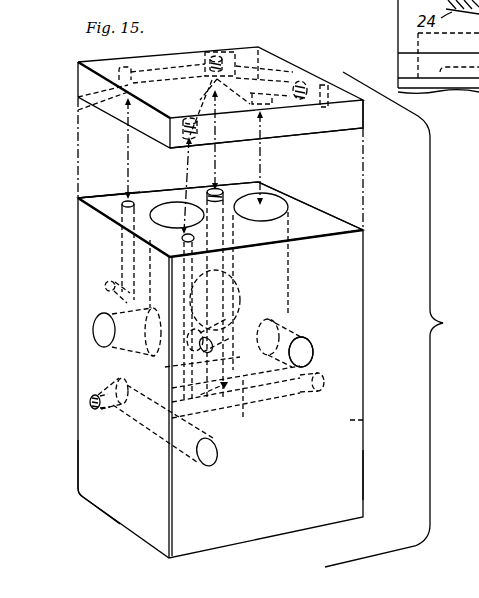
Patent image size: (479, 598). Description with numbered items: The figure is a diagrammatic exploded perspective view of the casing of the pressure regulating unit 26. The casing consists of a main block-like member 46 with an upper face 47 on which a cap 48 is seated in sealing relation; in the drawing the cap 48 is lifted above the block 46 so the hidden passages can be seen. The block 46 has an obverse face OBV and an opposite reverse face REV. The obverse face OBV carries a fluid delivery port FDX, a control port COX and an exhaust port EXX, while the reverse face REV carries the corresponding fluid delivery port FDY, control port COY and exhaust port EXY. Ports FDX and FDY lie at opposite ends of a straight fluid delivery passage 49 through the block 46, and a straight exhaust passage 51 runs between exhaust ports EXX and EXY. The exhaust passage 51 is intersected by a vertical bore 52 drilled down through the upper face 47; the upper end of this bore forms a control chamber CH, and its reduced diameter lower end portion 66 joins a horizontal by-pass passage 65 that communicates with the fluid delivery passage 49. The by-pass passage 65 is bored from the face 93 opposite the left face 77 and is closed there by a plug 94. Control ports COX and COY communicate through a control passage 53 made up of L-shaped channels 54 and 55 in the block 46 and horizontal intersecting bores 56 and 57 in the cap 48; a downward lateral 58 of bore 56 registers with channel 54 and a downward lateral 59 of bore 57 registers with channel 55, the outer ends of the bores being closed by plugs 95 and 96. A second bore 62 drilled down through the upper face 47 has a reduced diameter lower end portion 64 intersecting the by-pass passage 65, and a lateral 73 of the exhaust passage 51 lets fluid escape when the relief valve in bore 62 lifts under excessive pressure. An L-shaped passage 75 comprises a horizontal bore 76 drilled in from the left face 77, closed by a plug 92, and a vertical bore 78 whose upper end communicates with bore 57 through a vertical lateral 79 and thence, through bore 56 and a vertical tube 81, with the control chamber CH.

The pressure regulating unit 26 is at (282, 58).
The cap 48 is at (357, 113).
The main block-like member 46 is at (365, 283).
The upper face 47 is at (318, 217).
The left face 77 is at (77, 482).
The horizontal bore 56 is at (183, 117).
The plug 96 is at (232, 44).
The horizontal bore 57 is at (190, 105).
The downward lateral 58 is at (78, 110).
The downward lateral 59 is at (171, 148).
The vertical lateral 79 is at (222, 109).
The vertical tube 81 is at (274, 108).
The plug 95 is at (303, 84).
The vertical bore 78 is at (226, 187).
The L-shaped channel 55 is at (173, 315).
The L-shaped channel 54 is at (125, 243).
The control passage 53 is at (120, 255).
The second bore 62 is at (93, 330).
The lateral 73 is at (235, 300).
The vertical bore 52 is at (290, 290).
The exhaust passage 51 is at (302, 328).
The plug 94 is at (326, 378).
The reduced diameter lower end portion 64 is at (165, 367).
The plug 92 is at (89, 403).
The fluid delivery passage 49 is at (147, 432).
The L-shaped passage 75 is at (253, 410).
The reduced diameter lower end portion 66 is at (278, 400).
The by-pass passage 65 is at (243, 420).
The horizontal bore 76 is at (190, 402).
The face 93 is at (352, 421).
The control chamber CH is at (302, 188).
The reverse face REV is at (101, 197).
The obverse face OBV is at (347, 473).
The control port COY is at (105, 282).
The control port COX is at (210, 342).
The exhaust port EXY is at (234, 260).
The exhaust port EXX is at (307, 350).
The fluid delivery port FDY is at (107, 385).
The fluid delivery port FDX is at (205, 466).